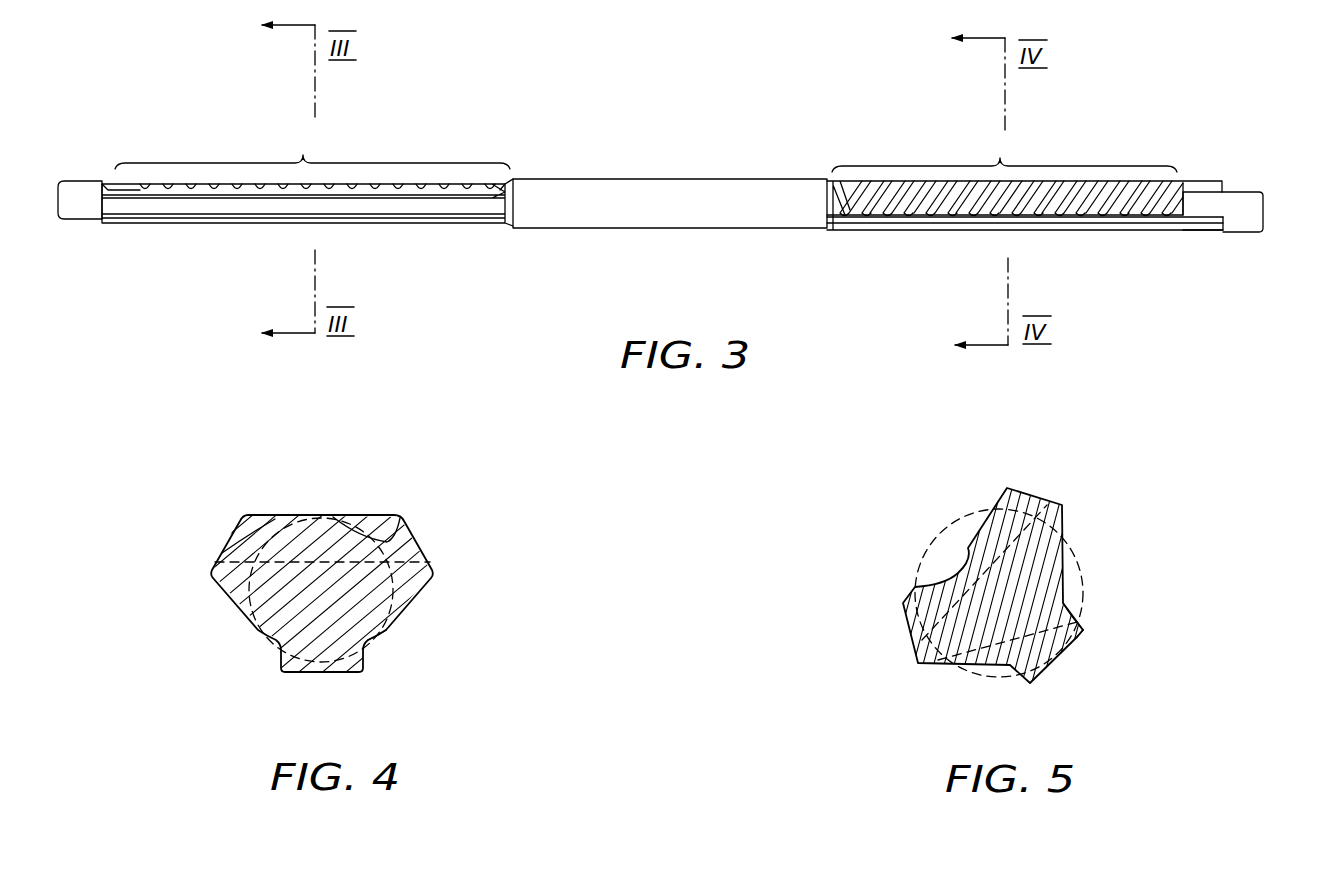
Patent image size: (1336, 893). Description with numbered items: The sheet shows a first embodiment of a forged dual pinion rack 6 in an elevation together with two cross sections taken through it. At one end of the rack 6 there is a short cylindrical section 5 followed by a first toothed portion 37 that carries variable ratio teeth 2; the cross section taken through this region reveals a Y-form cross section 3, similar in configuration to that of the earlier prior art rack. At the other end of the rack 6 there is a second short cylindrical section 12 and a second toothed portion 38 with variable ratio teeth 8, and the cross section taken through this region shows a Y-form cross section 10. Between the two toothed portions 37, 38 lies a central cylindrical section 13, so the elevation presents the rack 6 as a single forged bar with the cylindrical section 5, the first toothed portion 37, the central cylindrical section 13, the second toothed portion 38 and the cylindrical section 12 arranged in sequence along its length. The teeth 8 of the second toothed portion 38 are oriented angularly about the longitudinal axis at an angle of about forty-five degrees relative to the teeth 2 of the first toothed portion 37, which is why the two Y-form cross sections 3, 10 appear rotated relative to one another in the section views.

In FIG. 3, the variable ratio teeth 2 is at (392, 183).
In FIG. 4, the variable ratio teeth 2 is at (390, 527).
In FIG. 3, the Y-form cross section 3 is at (392, 212).
In FIG. 4, the Y-form cross section 3 is at (270, 683).
In FIG. 3, the short cylindrical section 5 is at (88, 208).
In FIG. 3, the forged dual pinion rack 6 is at (720, 132).
In FIG. 3, the variable ratio teeth 8 is at (1058, 182).
In FIG. 5, the variable ratio teeth 8 is at (950, 563).
In FIG. 3, the Y-form cross section 10 is at (1080, 232).
In FIG. 5, the Y-form cross section 10 is at (1097, 632).
In FIG. 3, the short cylindrical section 12 is at (1238, 194).
In FIG. 3, the central cylindrical section 13 is at (755, 196).
In FIG. 4, the central cylindrical section 13 is at (383, 637).
In FIG. 5, the central cylindrical section 13 is at (1073, 567).
In FIG. 3, the first toothed portion 37 is at (303, 155).
In FIG. 3, the second toothed portion 38 is at (1000, 158).